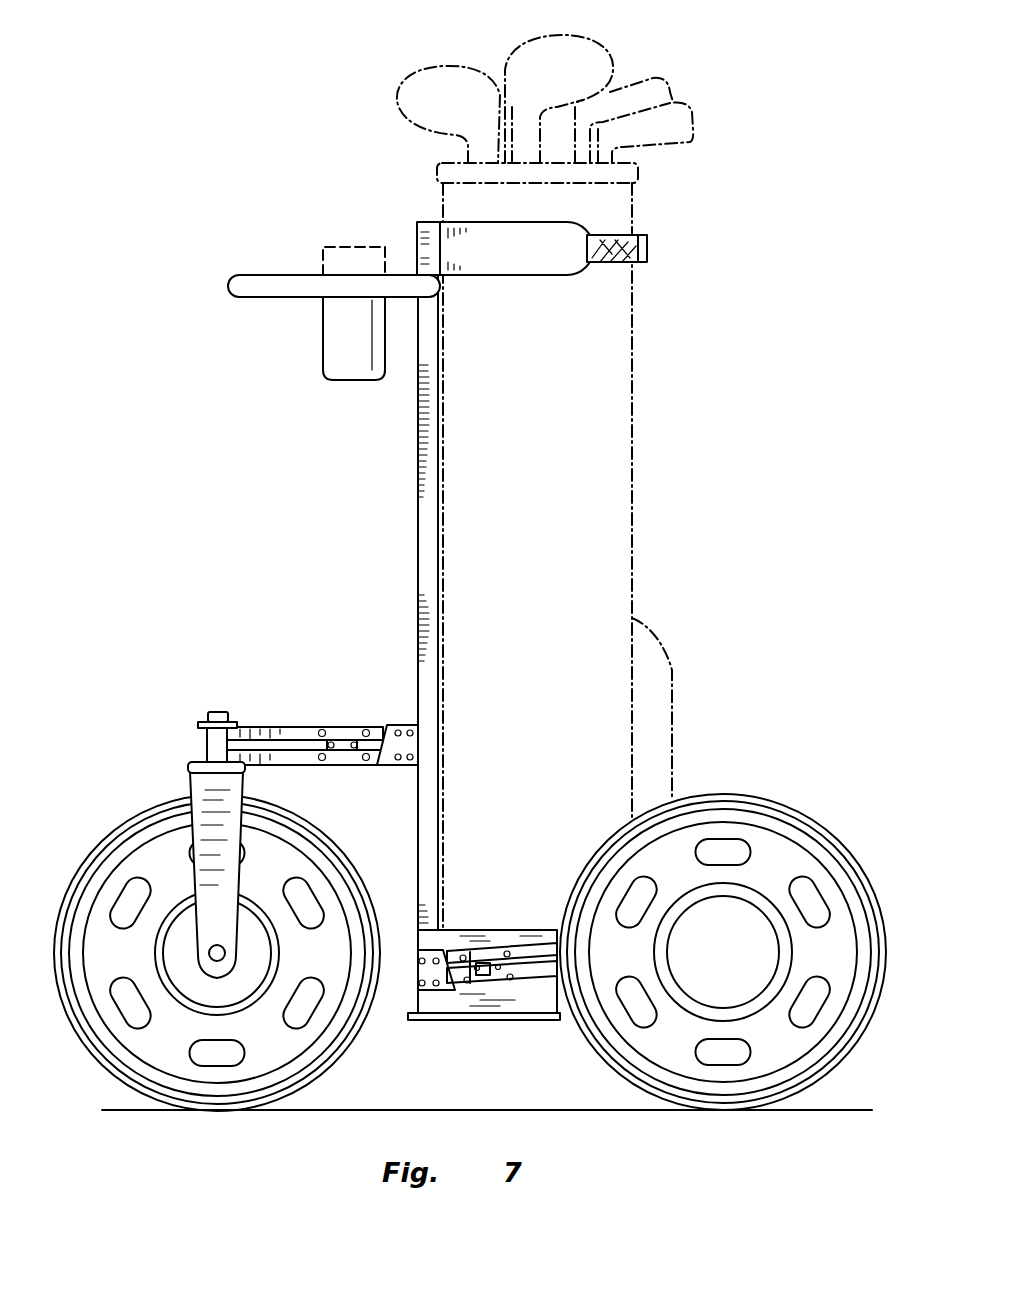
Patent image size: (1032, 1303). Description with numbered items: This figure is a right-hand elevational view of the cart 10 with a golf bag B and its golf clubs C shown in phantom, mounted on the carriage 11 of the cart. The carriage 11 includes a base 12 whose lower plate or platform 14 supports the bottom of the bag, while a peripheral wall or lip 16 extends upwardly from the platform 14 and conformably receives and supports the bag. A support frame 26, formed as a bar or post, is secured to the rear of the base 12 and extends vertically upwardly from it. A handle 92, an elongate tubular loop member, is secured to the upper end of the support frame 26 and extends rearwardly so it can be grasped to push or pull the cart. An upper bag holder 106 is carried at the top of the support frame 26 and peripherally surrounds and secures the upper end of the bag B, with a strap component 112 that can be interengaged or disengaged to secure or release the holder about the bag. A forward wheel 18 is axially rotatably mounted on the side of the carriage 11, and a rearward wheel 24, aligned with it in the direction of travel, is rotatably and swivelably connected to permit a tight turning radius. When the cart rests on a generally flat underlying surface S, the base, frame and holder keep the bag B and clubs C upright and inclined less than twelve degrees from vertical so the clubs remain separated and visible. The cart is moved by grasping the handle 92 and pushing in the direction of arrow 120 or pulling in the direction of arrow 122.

The cart 10 is at (186, 417).
The carriage 11 is at (405, 618).
The base 12 is at (472, 1020).
The platform 14 is at (527, 1020).
The lip 16 is at (523, 930).
The forward wheel 18 is at (767, 797).
The rearward wheel 24 is at (95, 842).
The support frame 26 is at (420, 500).
The handle 92 is at (228, 283).
The upper bag holder 106 is at (517, 275).
The strap component 112 is at (620, 252).
The arrow 120 is at (766, 238).
The arrow 122 is at (255, 177).
The golf bag B is at (668, 441).
The golf clubs C is at (637, 65).
The underlying surface S is at (847, 1110).